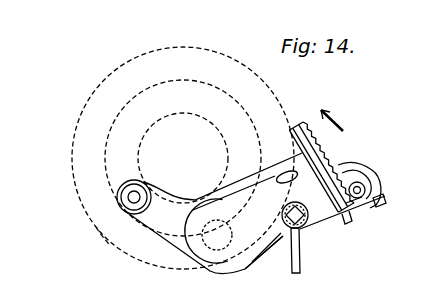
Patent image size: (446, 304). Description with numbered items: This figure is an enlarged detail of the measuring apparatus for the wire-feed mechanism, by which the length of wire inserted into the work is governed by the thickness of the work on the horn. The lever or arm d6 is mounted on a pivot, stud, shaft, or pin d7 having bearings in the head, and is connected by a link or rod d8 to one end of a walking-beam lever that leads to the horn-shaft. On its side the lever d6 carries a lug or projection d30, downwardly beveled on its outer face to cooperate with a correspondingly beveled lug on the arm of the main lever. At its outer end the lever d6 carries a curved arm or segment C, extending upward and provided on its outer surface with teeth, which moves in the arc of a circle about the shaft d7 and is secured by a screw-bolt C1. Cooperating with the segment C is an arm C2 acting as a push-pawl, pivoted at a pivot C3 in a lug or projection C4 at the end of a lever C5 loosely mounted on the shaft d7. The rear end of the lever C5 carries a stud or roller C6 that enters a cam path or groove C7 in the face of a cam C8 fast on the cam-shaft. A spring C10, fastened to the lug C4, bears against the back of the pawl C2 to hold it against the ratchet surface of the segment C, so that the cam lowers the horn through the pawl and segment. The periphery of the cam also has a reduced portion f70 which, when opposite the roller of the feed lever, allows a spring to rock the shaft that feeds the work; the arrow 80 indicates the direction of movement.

The curved arm or segment C is at (296, 126).
The screw-bolt C1 is at (346, 225).
The arm or push-pawl C2 is at (332, 170).
The pivot C3 is at (378, 201).
The lug or projection C4 is at (357, 203).
The lever C5 is at (143, 227).
The stud or roller C6 is at (117, 198).
The cam path or groove C7 is at (106, 167).
The cam C8 is at (76, 129).
The spring C10 is at (360, 170).
The lever or arm d6 is at (278, 241).
The pivot, stud, shaft, or pin d7 is at (229, 224).
The link or rod d8 is at (303, 237).
The lug or projection d30 is at (284, 173).
The reduced portion f70 is at (102, 226).
The direction arrow 80 is at (338, 116).